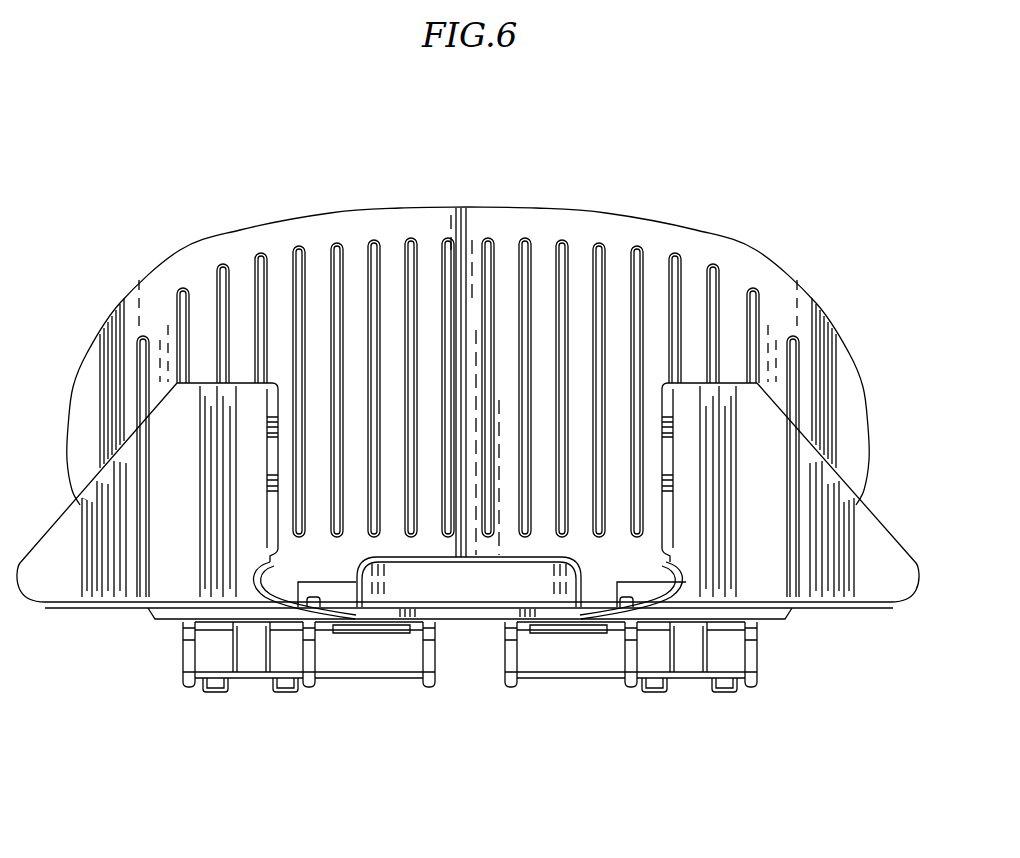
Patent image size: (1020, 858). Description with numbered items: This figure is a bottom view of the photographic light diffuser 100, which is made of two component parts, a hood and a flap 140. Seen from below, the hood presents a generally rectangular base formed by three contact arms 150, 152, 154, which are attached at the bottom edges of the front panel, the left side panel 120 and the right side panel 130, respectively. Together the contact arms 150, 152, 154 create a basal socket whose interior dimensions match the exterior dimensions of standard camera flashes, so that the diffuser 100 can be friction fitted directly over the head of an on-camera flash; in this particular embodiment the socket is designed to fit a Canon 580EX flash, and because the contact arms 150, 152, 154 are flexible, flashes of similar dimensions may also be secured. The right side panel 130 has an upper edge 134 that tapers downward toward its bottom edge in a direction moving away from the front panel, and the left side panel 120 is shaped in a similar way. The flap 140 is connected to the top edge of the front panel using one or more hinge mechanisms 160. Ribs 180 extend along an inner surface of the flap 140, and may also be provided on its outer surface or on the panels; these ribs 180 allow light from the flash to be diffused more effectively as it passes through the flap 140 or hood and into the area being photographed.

The diffuser 100 is at (818, 718).
The left side panel 120 is at (843, 582).
The right side panel 130 is at (76, 585).
The upper edge 134 is at (133, 441).
The flap 140 is at (538, 215).
The contact arm 150 is at (468, 620).
The contact arm 152 is at (675, 453).
The contact arm 154 is at (280, 450).
The hinge mechanism 160 is at (758, 660).
The ribs 180 is at (406, 248).